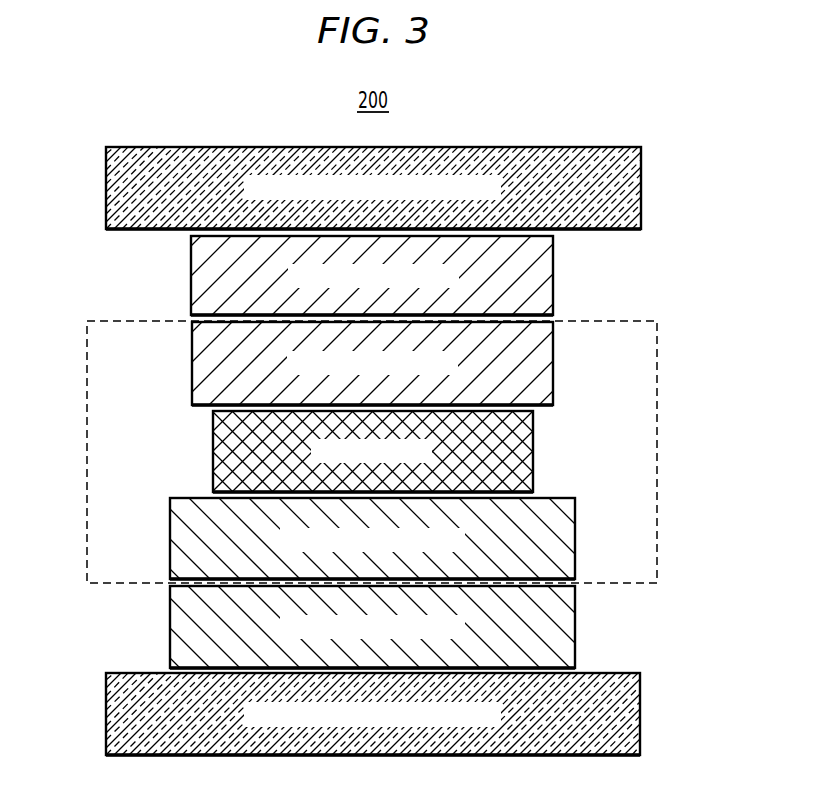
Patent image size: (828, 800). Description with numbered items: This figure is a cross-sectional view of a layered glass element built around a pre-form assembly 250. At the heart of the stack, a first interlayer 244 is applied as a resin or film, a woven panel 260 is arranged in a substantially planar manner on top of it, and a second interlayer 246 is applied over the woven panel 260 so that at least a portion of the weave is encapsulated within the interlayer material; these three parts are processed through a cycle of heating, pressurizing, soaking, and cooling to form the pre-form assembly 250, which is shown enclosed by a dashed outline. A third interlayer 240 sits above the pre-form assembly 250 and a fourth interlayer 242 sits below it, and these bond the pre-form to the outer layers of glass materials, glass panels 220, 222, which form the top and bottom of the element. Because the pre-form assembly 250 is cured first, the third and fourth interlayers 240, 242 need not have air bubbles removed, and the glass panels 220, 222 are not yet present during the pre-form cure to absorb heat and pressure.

The glass panel 220 is at (106, 187).
The glass panel 222 is at (106, 714).
The third interlayer 240 is at (191, 277).
The fourth interlayer 242 is at (170, 628).
The first interlayer 244 is at (192, 363).
The second interlayer 246 is at (170, 540).
The pre-form assembly 250 is at (657, 363).
The woven panel 260 is at (213, 452).